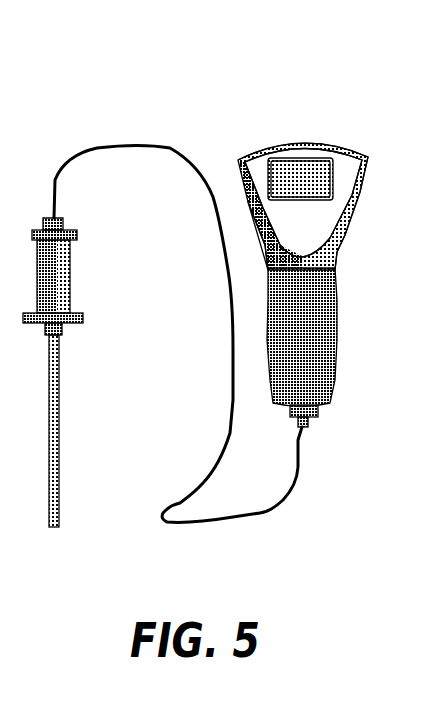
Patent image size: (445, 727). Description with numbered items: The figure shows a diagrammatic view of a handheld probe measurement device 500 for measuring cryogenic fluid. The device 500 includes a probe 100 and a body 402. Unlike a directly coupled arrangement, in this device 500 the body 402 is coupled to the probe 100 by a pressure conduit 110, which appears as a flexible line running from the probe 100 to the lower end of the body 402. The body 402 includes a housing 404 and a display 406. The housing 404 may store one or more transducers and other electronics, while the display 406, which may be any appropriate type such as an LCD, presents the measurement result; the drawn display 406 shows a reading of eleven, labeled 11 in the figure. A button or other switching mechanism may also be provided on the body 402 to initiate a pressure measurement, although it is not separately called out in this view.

The handheld probe measurement device 500 is at (214, 66).
The body 402 is at (357, 185).
The housing 404 is at (322, 367).
The display 406 is at (273, 172).
The display readout 11 is at (301, 182).
The pressure conduit 110 is at (263, 513).
The probe 100 is at (53, 397).